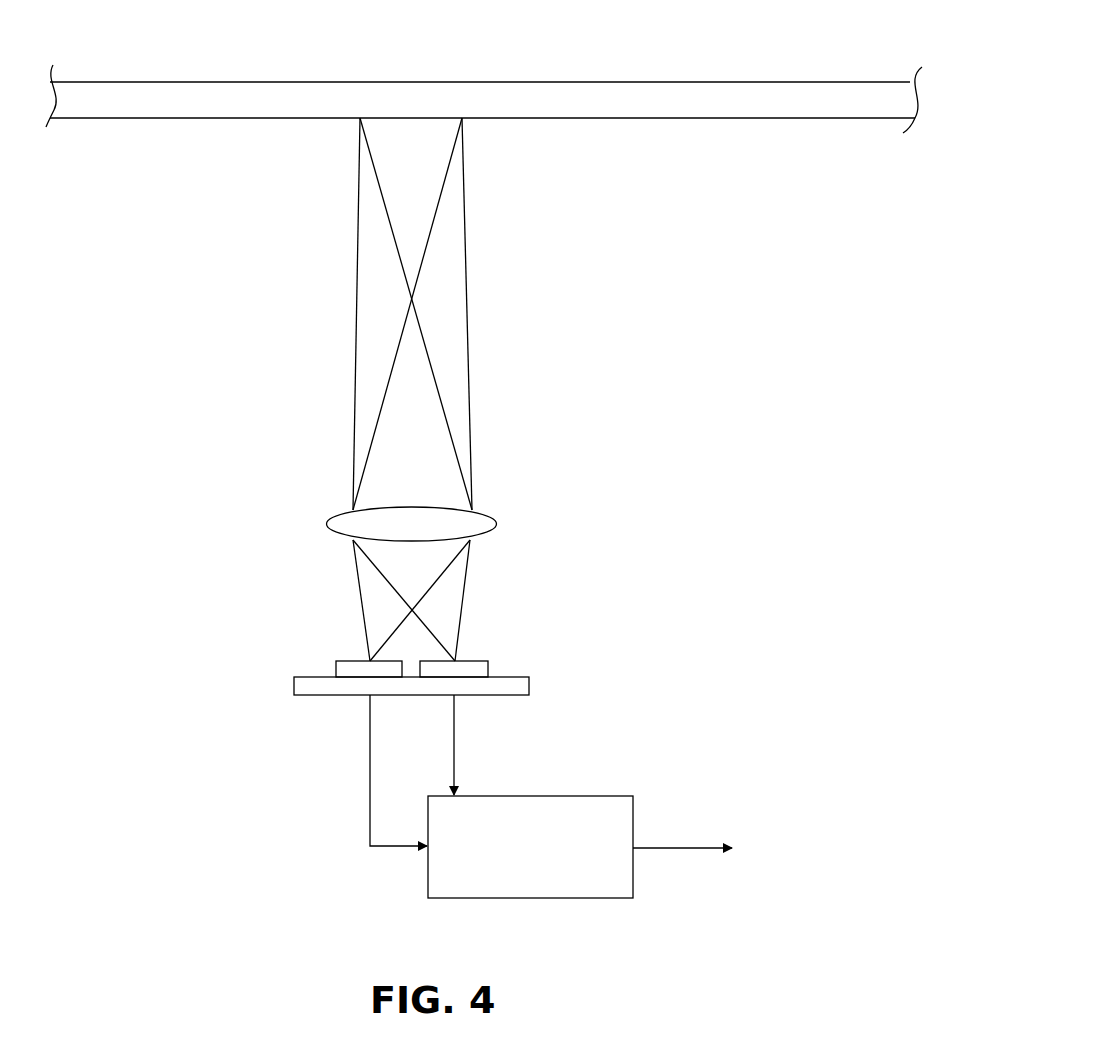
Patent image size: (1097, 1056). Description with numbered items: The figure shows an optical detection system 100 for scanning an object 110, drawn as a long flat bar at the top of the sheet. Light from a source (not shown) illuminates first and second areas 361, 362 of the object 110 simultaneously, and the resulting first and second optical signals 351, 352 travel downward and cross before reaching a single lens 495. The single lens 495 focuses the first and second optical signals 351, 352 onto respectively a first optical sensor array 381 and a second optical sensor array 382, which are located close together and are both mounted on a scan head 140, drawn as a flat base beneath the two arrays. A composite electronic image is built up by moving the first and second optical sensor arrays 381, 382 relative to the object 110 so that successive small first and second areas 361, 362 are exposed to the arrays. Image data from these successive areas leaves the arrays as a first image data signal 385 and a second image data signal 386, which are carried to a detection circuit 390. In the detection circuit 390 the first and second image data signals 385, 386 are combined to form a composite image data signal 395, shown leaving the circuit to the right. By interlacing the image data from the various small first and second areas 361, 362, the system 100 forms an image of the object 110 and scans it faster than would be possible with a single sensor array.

The object 110 is at (665, 82).
The first area 361 is at (338, 128).
The second area 362 is at (478, 128).
The first optical signal 351 is at (386, 322).
The second optical signal 352 is at (436, 314).
The single lens 495 is at (497, 520).
The first optical sensor array 381 is at (336, 670).
The second optical sensor array 382 is at (480, 661).
The scan head 140 is at (521, 677).
The first image data signal 385 is at (370, 765).
The second image data signal 386 is at (456, 752).
The detection circuit 390 is at (606, 796).
The composite image data signal 395 is at (668, 848).
The optical detection system 100 is at (770, 625).